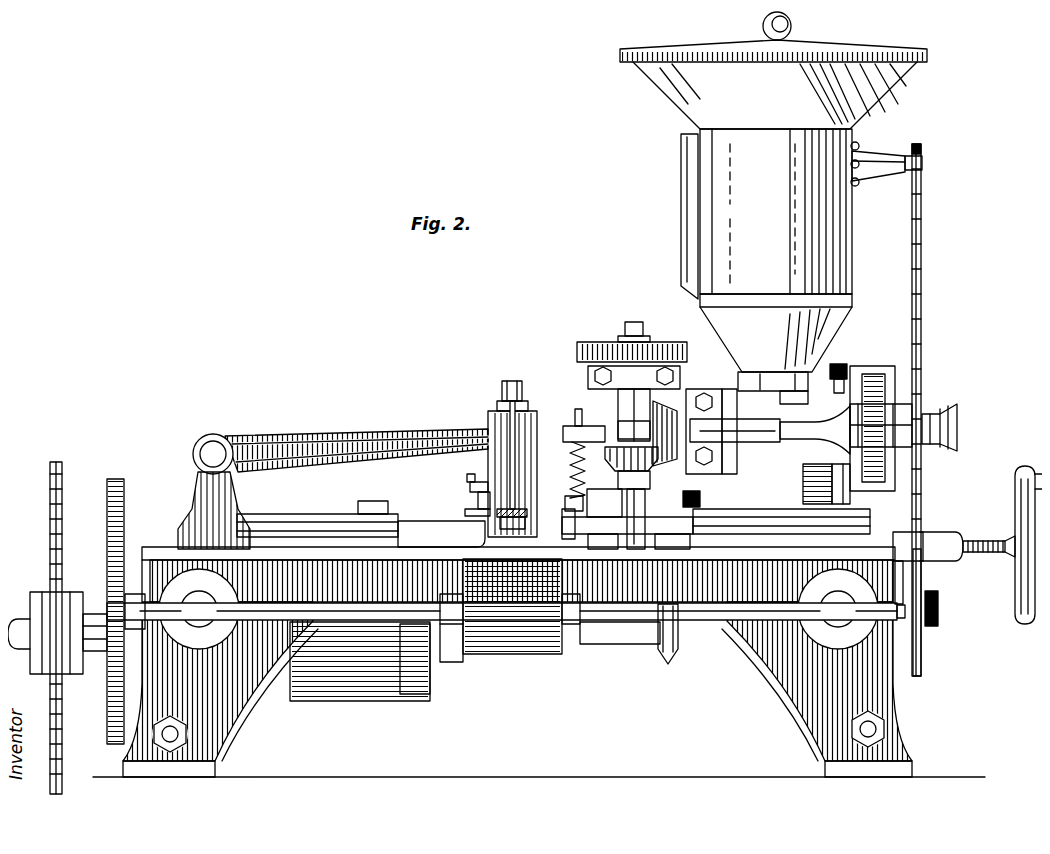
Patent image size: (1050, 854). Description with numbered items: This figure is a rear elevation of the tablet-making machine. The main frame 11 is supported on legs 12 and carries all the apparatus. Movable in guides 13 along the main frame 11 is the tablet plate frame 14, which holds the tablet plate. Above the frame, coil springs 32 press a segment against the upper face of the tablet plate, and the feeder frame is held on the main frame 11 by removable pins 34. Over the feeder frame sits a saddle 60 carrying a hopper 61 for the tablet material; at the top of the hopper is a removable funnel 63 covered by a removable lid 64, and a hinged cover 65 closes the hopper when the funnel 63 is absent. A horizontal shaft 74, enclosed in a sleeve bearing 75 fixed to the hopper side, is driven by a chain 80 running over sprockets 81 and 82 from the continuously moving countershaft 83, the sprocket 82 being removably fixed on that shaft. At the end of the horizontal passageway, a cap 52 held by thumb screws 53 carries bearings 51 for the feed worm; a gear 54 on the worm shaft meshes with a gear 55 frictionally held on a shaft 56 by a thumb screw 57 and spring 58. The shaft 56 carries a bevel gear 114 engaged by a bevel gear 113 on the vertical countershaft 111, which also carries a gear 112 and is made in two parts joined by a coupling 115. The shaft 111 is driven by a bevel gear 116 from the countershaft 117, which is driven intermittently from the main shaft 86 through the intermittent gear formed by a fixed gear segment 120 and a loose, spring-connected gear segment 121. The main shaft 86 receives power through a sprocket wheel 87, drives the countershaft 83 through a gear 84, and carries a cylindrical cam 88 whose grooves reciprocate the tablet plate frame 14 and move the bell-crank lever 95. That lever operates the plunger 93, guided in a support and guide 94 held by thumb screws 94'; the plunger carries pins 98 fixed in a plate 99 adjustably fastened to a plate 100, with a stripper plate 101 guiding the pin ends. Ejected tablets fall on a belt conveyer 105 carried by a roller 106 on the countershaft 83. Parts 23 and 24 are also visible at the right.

The removable lid 64 is at (830, 44).
The removable funnel 63 is at (875, 90).
The hopper 61 is at (843, 273).
The hinged cover 65 is at (681, 200).
The saddle 60 is at (738, 385).
The sleeve bearing 75 is at (889, 177).
The horizontal shaft 74 is at (922, 160).
The sprocket 81 is at (921, 143).
The chain 80 is at (922, 268).
The bearings 51 is at (897, 386).
The gear 54 is at (873, 370).
The thumb screws 53 is at (838, 360).
The shaft 56 is at (812, 440).
The gear 55 is at (882, 446).
The spring 58 is at (918, 442).
The thumb screw 57 is at (957, 405).
The cap 52 is at (830, 484).
The bevel gear 114 is at (696, 461).
The vertical countershaft 111 is at (634, 318).
The gear 112 is at (588, 340).
The coupling 115 is at (618, 420).
The bevel gear 113 is at (606, 450).
The coil springs 32 is at (572, 440).
The removable pins 34 is at (700, 496).
The support and guide 94 is at (491, 460).
The plunger 93 is at (511, 377).
The thumb screws 94' is at (486, 528).
The plate 100 is at (470, 472).
The plate 99 is at (472, 483).
The pins 98 is at (478, 494).
The stripper plate 101 is at (465, 508).
The bell-crank lever 95 is at (315, 428).
The guides 13 is at (295, 510).
The tablet plate frame 14 is at (408, 517).
The main frame 11 is at (148, 540).
The legs 12 is at (262, 705).
The countershaft 83 is at (494, 610).
The main shaft 86 is at (20, 620).
The gear 84 is at (118, 475).
The sprocket wheel 87 is at (62, 755).
The cylindrical cam 88 is at (323, 697).
The gear segment 120 is at (410, 690).
The gear segment 121 is at (437, 660).
The belt conveyer 105 is at (525, 652).
The roller 106 is at (560, 655).
The countershaft 117 is at (630, 640).
The bevel gear 116 is at (668, 662).
The sprocket 82 is at (917, 674).
The crank shaft 23 is at (985, 558).
The crank handle 24 is at (1015, 608).